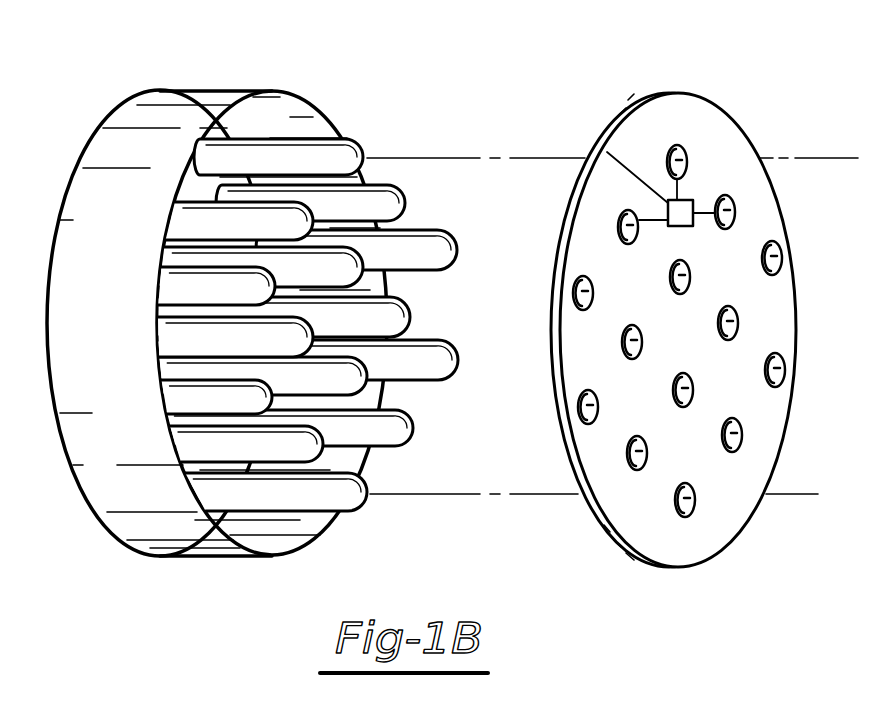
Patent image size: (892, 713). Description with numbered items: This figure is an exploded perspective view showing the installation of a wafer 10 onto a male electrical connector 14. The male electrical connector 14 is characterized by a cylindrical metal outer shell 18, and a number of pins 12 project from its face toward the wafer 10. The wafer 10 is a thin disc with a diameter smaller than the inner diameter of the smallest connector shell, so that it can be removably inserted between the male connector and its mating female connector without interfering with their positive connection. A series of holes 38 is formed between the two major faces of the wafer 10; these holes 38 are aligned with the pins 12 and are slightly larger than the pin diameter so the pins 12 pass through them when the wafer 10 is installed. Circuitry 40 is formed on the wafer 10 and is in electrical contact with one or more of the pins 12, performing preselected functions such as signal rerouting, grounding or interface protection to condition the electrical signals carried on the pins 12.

The wafer 10 is at (705, 114).
The pins 12 is at (393, 208).
The male electrical connector 14 is at (167, 92).
The cylindrical metal outer shell 18 is at (178, 548).
The holes 38 is at (776, 353).
The circuitry 40 is at (697, 203).